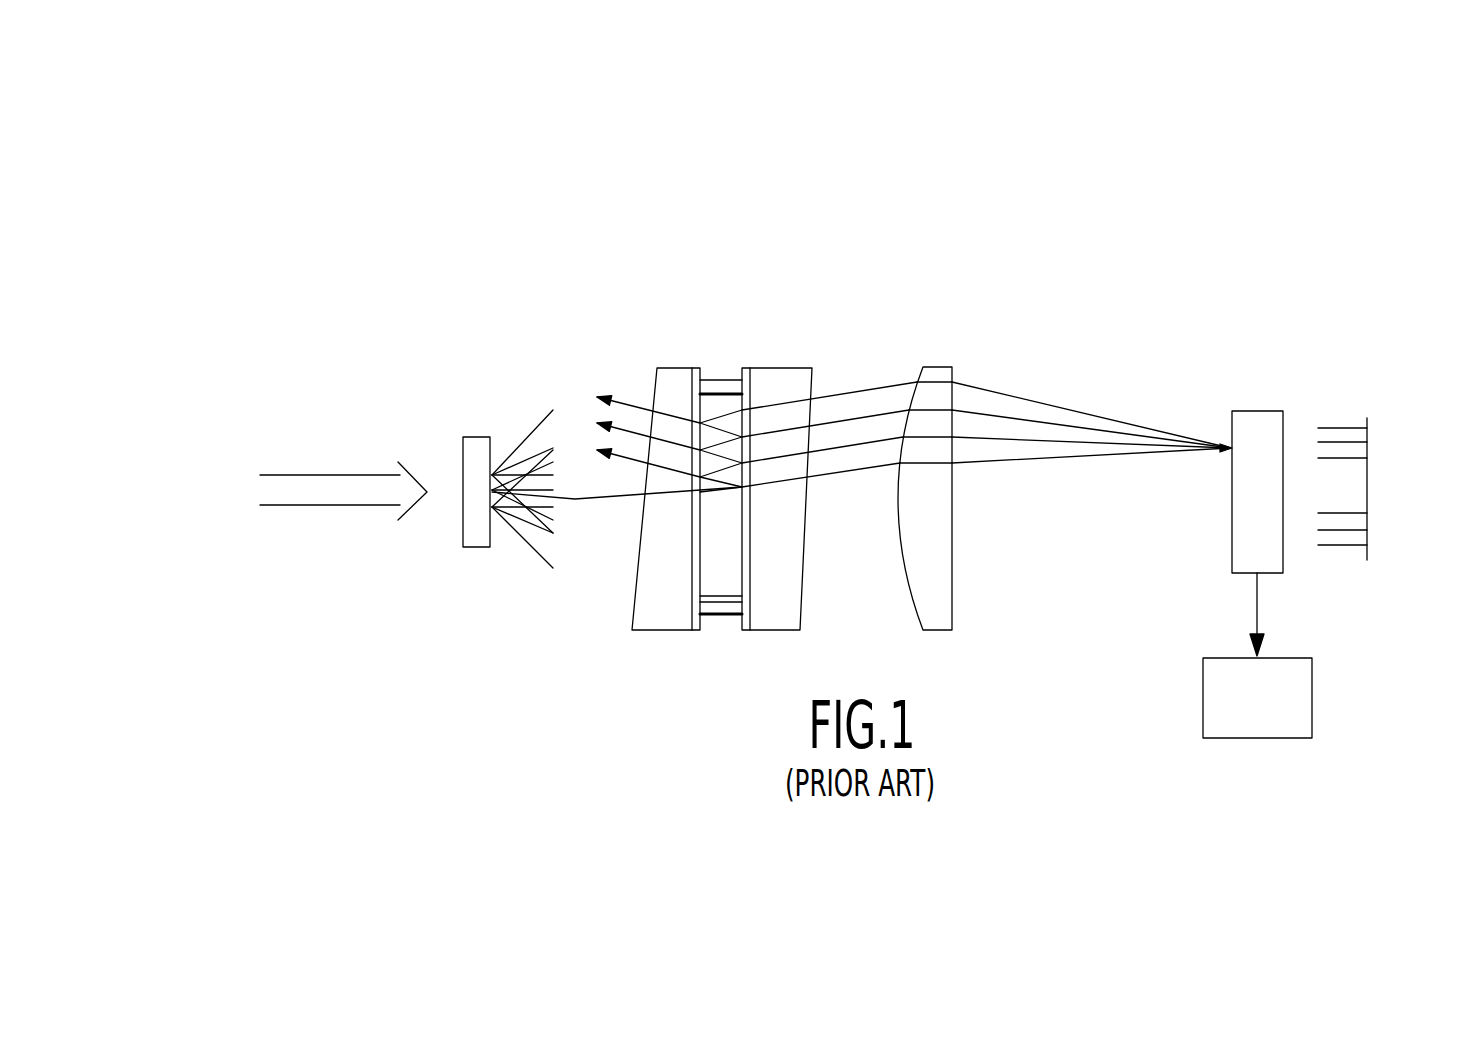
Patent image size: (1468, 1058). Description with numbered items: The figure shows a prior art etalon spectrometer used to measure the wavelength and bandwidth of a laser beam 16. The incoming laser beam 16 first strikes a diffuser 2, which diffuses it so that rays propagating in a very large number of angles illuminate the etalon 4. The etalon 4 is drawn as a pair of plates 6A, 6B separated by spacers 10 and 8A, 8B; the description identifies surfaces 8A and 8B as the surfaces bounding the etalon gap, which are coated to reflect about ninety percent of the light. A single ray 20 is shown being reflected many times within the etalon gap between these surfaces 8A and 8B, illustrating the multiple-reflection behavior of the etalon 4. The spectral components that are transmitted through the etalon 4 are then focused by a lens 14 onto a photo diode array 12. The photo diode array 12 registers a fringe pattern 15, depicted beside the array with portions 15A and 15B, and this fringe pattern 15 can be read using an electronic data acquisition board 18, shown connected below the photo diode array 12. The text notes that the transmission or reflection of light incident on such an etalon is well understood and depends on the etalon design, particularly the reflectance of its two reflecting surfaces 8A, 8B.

The diffuser 2 is at (473, 437).
The etalon 4 is at (775, 285).
The first etalon plate 6A is at (670, 368).
The second etalon plate 6B is at (773, 368).
The reflecting surface 8A is at (705, 632).
The reflecting surface 8B is at (737, 632).
The spacer 10 is at (720, 380).
The photo diode array 12 is at (1255, 411).
The lens 14 is at (935, 367).
The fringe pattern 15 is at (1387, 472).
The lower adjuster 15A is at (1345, 545).
The upper adjuster 15B is at (1342, 428).
The laser beam 16 is at (340, 463).
The electronic data acquisition board 18 is at (1307, 698).
The single ray 20 is at (602, 512).